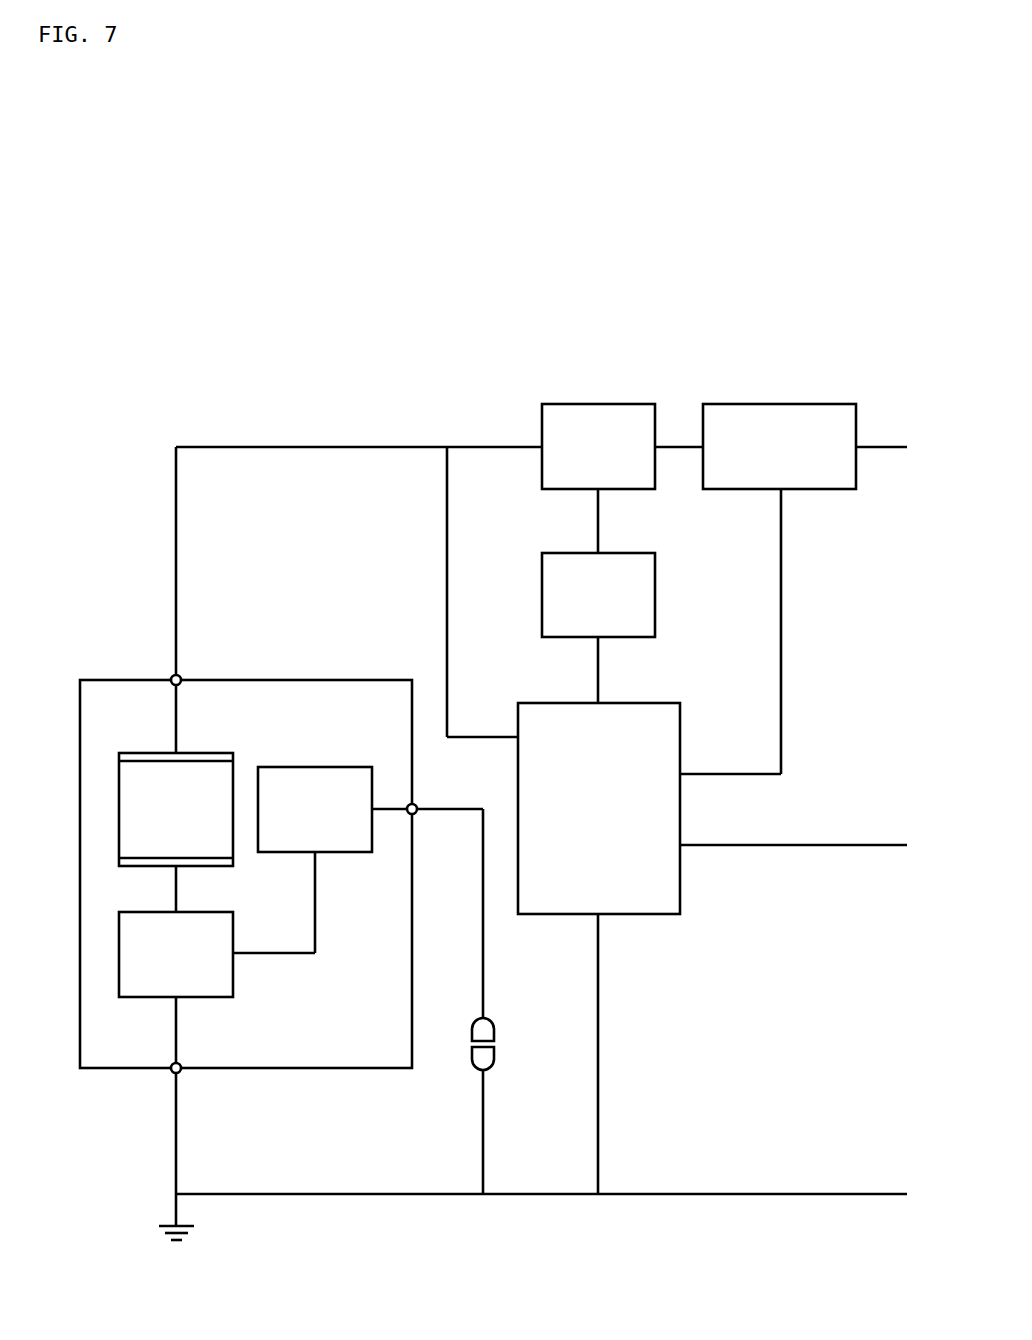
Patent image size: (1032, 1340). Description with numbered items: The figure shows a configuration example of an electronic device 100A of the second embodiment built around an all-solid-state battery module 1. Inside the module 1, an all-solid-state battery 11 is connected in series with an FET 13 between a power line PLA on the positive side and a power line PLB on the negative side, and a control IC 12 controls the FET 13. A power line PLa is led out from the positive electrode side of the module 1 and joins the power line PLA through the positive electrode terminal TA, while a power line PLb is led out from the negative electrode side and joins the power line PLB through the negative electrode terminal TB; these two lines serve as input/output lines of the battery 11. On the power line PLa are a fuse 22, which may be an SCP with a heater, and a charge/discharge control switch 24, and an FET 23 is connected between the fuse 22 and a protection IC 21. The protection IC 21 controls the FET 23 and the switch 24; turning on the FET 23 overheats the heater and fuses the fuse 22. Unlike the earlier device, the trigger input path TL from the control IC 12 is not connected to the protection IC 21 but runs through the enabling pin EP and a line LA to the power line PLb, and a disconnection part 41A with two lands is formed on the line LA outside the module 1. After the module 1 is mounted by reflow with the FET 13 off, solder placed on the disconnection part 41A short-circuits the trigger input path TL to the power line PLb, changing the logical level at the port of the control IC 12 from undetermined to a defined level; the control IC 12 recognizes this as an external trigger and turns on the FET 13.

The electronic device 100A is at (501, 284).
The all-solid-state battery module 1 is at (249, 680).
The all-solid-state battery 11 is at (197, 753).
The control IC 12 is at (314, 767).
The FET 13 is at (197, 912).
The protection IC 21 is at (631, 702).
The fuse 22 is at (631, 404).
The FET 23 is at (631, 552).
The charge/discharge control switch 24 is at (779, 404).
The disconnection part 41A is at (509, 1045).
The positive electrode terminal TA is at (172, 676).
The negative electrode terminal TB is at (172, 1073).
The power line PLA is at (176, 726).
The power line PLB is at (176, 1036).
The trigger input path TL is at (391, 805).
The enabling pin EP is at (416, 806).
The line LA is at (484, 1137).
The power line PLa is at (277, 446).
The power line PLb is at (280, 1196).